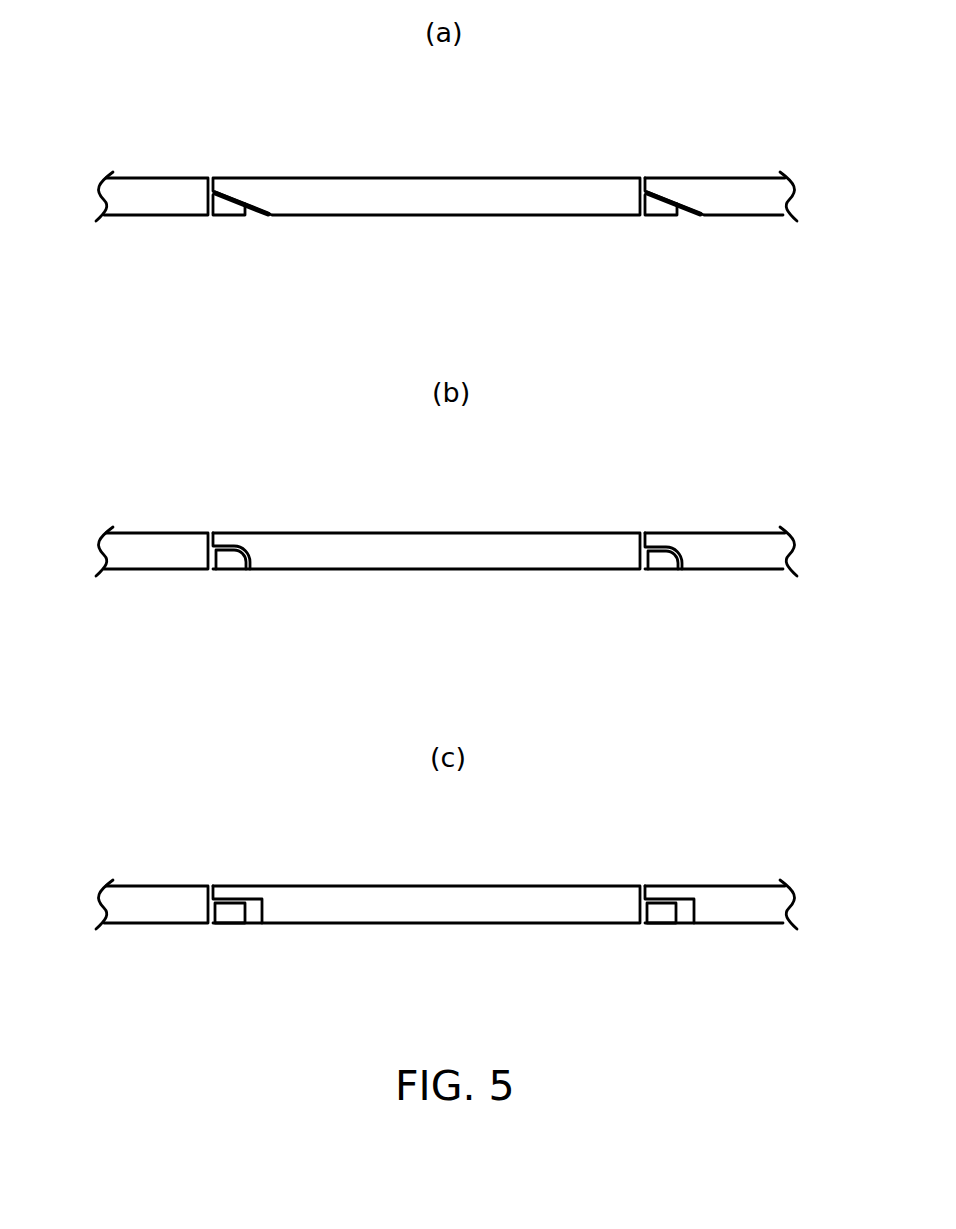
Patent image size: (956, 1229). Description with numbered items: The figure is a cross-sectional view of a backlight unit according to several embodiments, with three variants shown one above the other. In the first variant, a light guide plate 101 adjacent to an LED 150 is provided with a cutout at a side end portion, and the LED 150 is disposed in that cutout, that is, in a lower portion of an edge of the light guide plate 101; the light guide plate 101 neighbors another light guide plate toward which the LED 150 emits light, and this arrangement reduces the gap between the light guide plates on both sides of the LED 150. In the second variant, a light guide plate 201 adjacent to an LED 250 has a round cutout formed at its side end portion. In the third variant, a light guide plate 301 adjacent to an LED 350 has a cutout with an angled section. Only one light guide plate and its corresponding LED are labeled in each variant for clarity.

The light guide plate 101 is at (407, 195).
The LED 150 is at (231, 198).
The light guide plate 201 is at (381, 546).
The LED 250 is at (230, 553).
The light guide plate 301 is at (402, 900).
The LED 350 is at (232, 908).